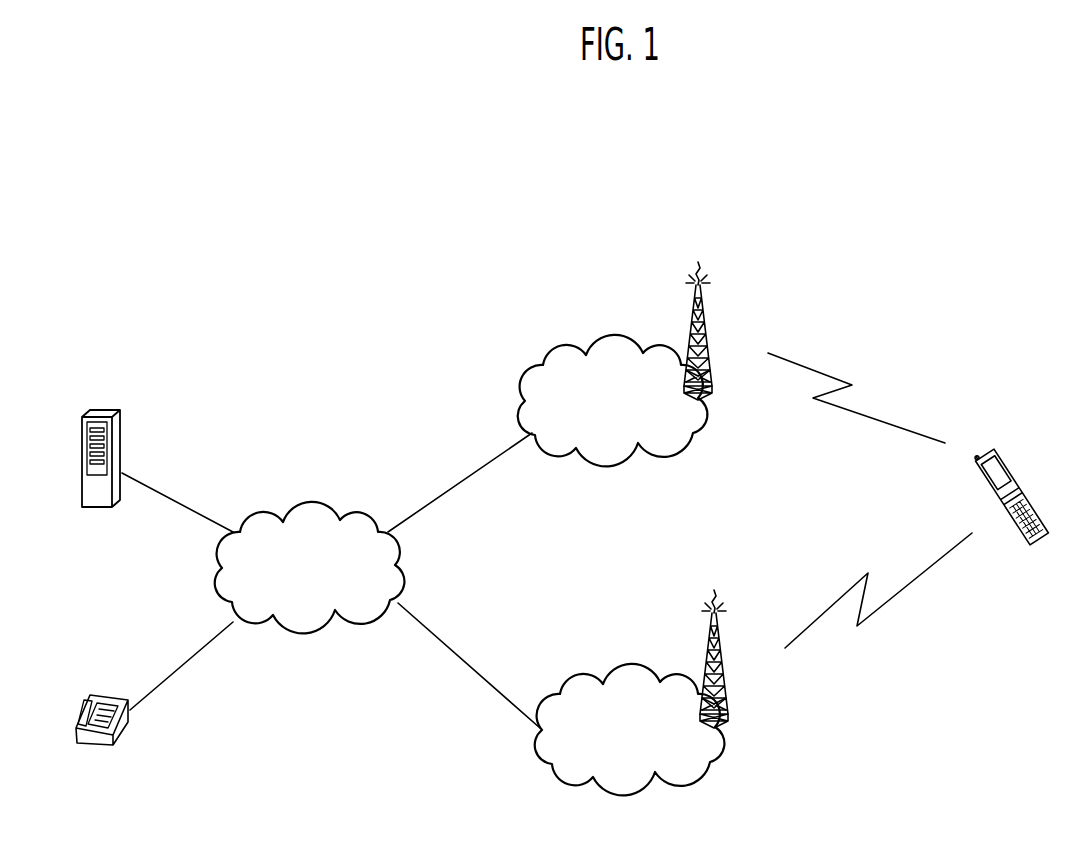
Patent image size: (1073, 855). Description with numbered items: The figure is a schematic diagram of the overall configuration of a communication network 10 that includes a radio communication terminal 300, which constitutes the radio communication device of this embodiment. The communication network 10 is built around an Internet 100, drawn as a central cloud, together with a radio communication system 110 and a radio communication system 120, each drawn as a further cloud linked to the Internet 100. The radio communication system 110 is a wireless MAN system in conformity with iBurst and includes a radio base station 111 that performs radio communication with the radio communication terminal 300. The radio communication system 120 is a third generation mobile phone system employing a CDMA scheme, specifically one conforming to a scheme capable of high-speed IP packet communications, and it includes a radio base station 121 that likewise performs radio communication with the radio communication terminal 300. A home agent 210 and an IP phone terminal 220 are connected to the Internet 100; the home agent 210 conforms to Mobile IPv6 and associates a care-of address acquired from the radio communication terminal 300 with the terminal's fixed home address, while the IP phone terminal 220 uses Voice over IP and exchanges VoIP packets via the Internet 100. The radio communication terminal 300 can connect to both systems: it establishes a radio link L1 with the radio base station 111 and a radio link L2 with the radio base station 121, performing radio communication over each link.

The communication network 10 is at (947, 176).
The Internet 100 is at (308, 509).
The radio communication system 110 is at (615, 343).
The radio base station 111 is at (702, 308).
The radio communication system 120 is at (628, 672).
The radio base station 121 is at (727, 690).
The home agent 210 is at (103, 404).
The IP phone terminal 220 is at (110, 697).
The radio communication terminal 300 is at (1052, 485).
The radio link L1 is at (810, 368).
The radio link L2 is at (927, 567).